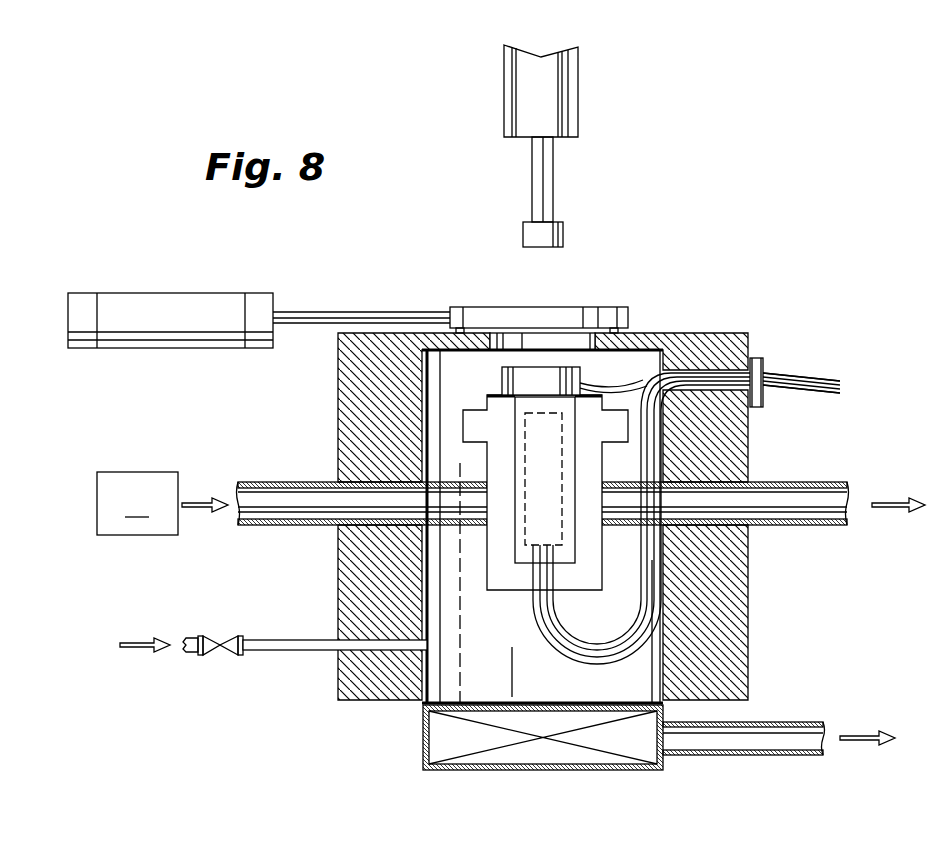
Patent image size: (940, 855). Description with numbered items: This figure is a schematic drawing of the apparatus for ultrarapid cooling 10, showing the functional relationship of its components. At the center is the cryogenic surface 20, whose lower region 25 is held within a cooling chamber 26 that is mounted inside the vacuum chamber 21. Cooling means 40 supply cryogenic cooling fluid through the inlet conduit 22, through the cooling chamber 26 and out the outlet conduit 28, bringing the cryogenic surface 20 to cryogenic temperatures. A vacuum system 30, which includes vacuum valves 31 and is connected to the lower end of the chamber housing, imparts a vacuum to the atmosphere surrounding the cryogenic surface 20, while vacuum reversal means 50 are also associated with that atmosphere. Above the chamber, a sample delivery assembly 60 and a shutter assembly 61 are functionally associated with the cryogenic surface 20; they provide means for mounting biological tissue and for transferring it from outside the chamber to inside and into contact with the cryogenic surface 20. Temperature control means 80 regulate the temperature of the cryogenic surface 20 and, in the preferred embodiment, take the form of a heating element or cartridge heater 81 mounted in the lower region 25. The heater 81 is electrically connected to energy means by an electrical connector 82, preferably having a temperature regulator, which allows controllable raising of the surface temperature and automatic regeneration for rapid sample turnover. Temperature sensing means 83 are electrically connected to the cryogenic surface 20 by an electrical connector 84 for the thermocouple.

The apparatus for ultrarapid cooling 10 is at (613, 227).
The cryogenic surface 20 is at (502, 383).
The vacuum chamber 21 is at (544, 679).
The inlet conduit 22 is at (327, 503).
The lower region of cryogenic surface 25 is at (512, 465).
The cooling chamber 26 is at (498, 542).
The outlet conduit 28 is at (780, 500).
The vacuum system 30 is at (715, 758).
The vacuum valves 31 is at (490, 770).
The cooling means 40 is at (162, 503).
The vacuum reversal means 50 is at (288, 662).
The sample delivery assembly 60 is at (523, 177).
The shutter assembly 61 is at (492, 293).
The temperature control means 80 is at (778, 353).
The heating element or cartridge heater 81 is at (573, 533).
The electrical connector for the heater 82 is at (636, 590).
The temperature sensing means 83 is at (757, 356).
The electrical connector for the thermocouple 84 is at (627, 378).